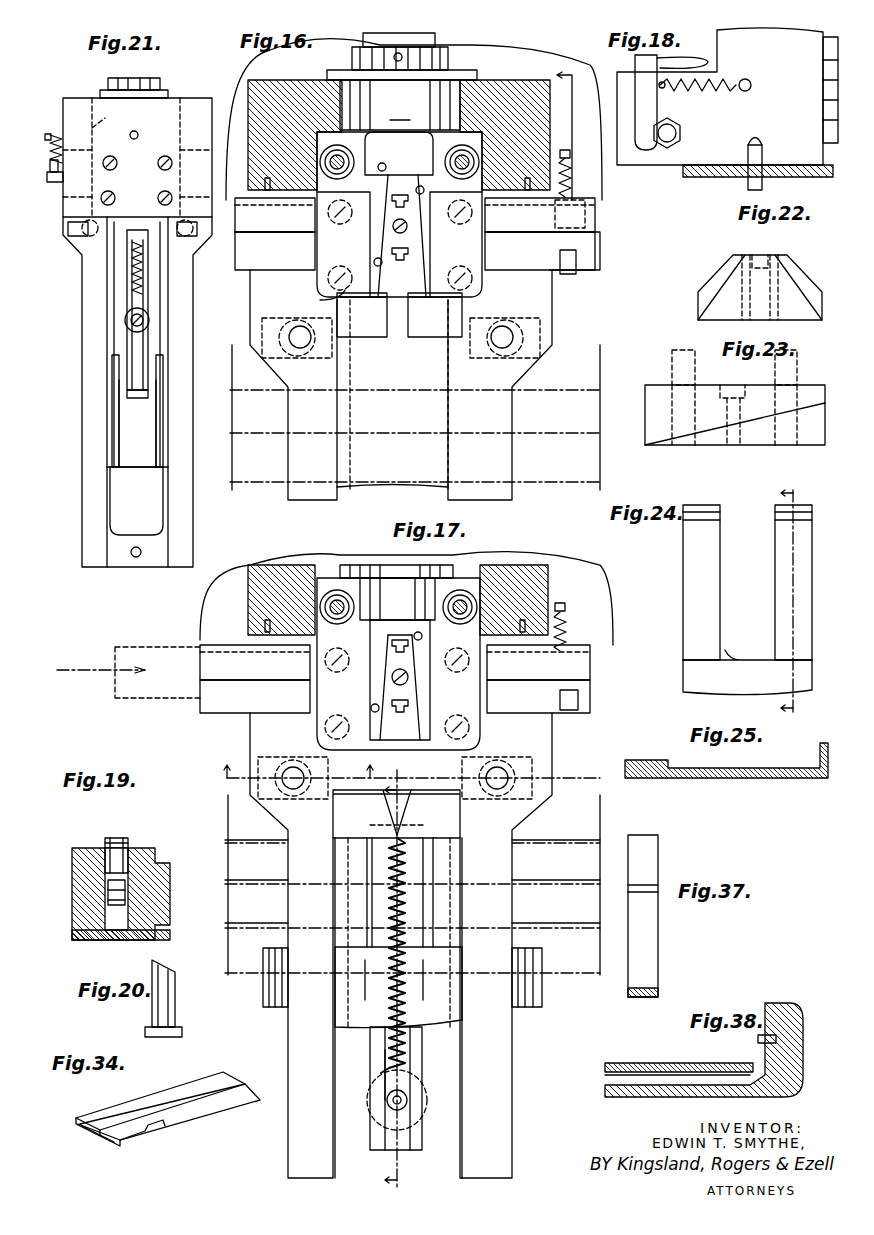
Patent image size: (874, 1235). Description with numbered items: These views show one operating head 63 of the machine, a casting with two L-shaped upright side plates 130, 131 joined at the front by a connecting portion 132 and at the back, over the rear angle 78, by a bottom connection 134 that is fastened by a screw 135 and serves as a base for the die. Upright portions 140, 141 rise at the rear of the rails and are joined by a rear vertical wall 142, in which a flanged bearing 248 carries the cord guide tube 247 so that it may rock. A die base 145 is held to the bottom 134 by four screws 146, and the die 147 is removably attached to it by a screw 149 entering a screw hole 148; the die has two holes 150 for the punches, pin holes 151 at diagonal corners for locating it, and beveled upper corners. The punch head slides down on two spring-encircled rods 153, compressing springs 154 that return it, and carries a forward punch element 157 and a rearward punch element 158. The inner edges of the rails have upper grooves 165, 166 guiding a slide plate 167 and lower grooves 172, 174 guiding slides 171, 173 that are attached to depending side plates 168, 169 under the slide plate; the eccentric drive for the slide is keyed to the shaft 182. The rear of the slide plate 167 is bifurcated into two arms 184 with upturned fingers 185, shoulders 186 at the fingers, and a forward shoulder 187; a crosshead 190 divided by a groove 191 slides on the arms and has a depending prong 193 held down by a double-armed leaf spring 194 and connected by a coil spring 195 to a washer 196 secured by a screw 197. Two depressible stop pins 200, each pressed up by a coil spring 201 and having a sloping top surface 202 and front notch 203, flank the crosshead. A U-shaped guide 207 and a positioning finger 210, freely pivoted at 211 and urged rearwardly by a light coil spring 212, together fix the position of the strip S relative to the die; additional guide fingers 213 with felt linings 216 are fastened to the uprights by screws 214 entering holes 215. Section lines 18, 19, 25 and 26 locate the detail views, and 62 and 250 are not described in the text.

In FIG. 16, the section line 18— 18 is at (562, 283).
In FIG. 17, the section line 19— 19 is at (402, 774).
In FIG. 24, the section line 25— 25 is at (798, 599).
In FIG. 17, the section line 26— 26 is at (403, 980).
In FIG. 17, the direction arrow 62 is at (238, 740).
In FIG. 21, the operating head 63 is at (109, 578).
In FIG. 16, the operating head 63 is at (513, 68).
In FIG. 18, the operating head 63 is at (667, 171).
In FIG. 17, the operating head 63 is at (540, 559).
In FIG. 38, the operating head 63 is at (778, 995).
In FIG. 16, the rear angle 78 is at (236, 110).
In FIG. 18, the rear angle 78 is at (808, 178).
In FIG. 17, the rear angle 78 is at (598, 580).
In FIG. 21, the side plate 130 is at (185, 522).
In FIG. 16, the side plate 130 is at (290, 497).
In FIG. 17, the side plate 130 is at (290, 1160).
In FIG. 19, the side plate 130 is at (72, 870).
In FIG. 38, the side plate 130 is at (605, 1085).
In FIG. 21, the side plate 131 is at (92, 537).
In FIG. 16, the side plate 131 is at (512, 495).
In FIG. 18, the side plate 131 is at (640, 160).
In FIG. 17, the side plate 131 is at (495, 1140).
In FIG. 21, the front connecting portion 132 is at (142, 565).
In FIG. 21, the bottom connection 134 is at (95, 108).
In FIG. 16, the bottom connection 134 is at (530, 80).
In FIG. 17, the bottom connection 134 is at (500, 565).
In FIG. 18, the screw 135 is at (750, 175).
In FIG. 21, the upright portion 140 is at (190, 98).
In FIG. 16, the upright portion 140 is at (290, 80).
In FIG. 17, the upright portion 140 is at (252, 600).
In FIG. 38, the upright portion 140 is at (800, 1025).
In FIG. 21, the upright portion 141 is at (118, 122).
In FIG. 16, the upright portion 141 is at (540, 110).
In FIG. 18, the upright portion 141 is at (745, 35).
In FIG. 17, the upright portion 141 is at (560, 580).
In FIG. 21, the rear vertical wall 142 is at (176, 98).
In FIG. 16, the rear vertical wall 142 is at (340, 80).
In FIG. 17, the rear vertical wall 142 is at (462, 566).
In FIG. 16, the die base 145 is at (330, 176).
In FIG. 17, the die base 145 is at (552, 575).
In FIG. 21, the screws 146 is at (160, 158).
In FIG. 16, the screws 146 is at (328, 280).
In FIG. 17, the screws 146 is at (325, 660).
In FIG. 16, the die 147 is at (330, 300).
In FIG. 22, the die 147 is at (712, 310).
In FIG. 23, the die 147 is at (745, 447).
In FIG. 17, the die 147 is at (372, 685).
In FIG. 22, the screw hole 148 is at (795, 258).
In FIG. 23, the screw hole 148 is at (730, 445).
In FIG. 16, the screw 149 is at (410, 238).
In FIG. 17, the screw 149 is at (410, 684).
In FIG. 16, the holes 150 is at (400, 190).
In FIG. 22, the holes 150 is at (742, 262).
In FIG. 23, the holes 150 is at (672, 440).
In FIG. 17, the holes 150 is at (392, 725).
In FIG. 16, the pin holes 151 is at (380, 250).
In FIG. 22, the pin holes 151 is at (712, 270).
In FIG. 17, the pin holes 151 is at (420, 640).
In FIG. 16, the spring-encircled rods 153 is at (337, 145).
In FIG. 17, the spring-encircled rods 153 is at (335, 590).
In FIG. 16, the springs 154 is at (325, 160).
In FIG. 17, the springs 154 is at (345, 595).
In FIG. 23, the forward punch element 157 is at (672, 365).
In FIG. 23, the rearward punch element 158 is at (797, 365).
In FIG. 16, the upper groove 165 is at (340, 495).
In FIG. 17, the upper groove 165 is at (333, 1122).
In FIG. 19, the upper groove 165 is at (158, 860).
In FIG. 16, the upper groove 166 is at (455, 488).
In FIG. 17, the upper groove 166 is at (455, 1060).
In FIG. 16, the slide plate 167 is at (372, 475).
In FIG. 24, the slide plate 167 is at (695, 680).
In FIG. 25, the slide plate 167 is at (645, 779).
In FIG. 17, the slide plate 167 is at (440, 1012).
In FIG. 21, the depending side plate 168 is at (160, 443).
In FIG. 21, the depending side plate 169 is at (118, 442).
In FIG. 21, the slide 171 is at (166, 402).
In FIG. 21, the lower groove 172 is at (170, 480).
In FIG. 19, the lower groove 172 is at (170, 928).
In FIG. 21, the slide 173 is at (110, 402).
In FIG. 21, the groove 174 is at (110, 488).
In FIG. 17, the shaft 182 is at (533, 990).
In FIG. 16, the arms 184 is at (335, 262).
In FIG. 24, the arms 184 is at (780, 595).
In FIG. 25, the arms 184 is at (745, 779).
In FIG. 17, the arms 184 is at (340, 862).
In FIG. 16, the fingers 185 is at (325, 222).
In FIG. 24, the fingers 185 is at (778, 512).
In FIG. 25, the fingers 185 is at (820, 748).
In FIG. 17, the fingers 185 is at (440, 790).
In FIG. 16, the shoulders 186 is at (330, 235).
In FIG. 24, the shoulders 186 is at (787, 520).
In FIG. 25, the shoulders 186 is at (818, 765).
In FIG. 17, the shoulders 186 is at (465, 800).
In FIG. 24, the shoulder 187 is at (720, 650).
In FIG. 25, the shoulder 187 is at (670, 766).
In FIG. 17, the shoulder 187 is at (440, 945).
In FIG. 16, the crosshead 190 is at (375, 337).
In FIG. 17, the crosshead 190 is at (440, 822).
In FIG. 16, the groove 191 is at (408, 318).
In FIG. 17, the groove 191 is at (385, 805).
In FIG. 21, the depending prong 193 is at (160, 192).
In FIG. 16, the depending prong 193 is at (408, 335).
In FIG. 17, the depending prong 193 is at (430, 790).
In FIG. 21, the double-armed leaf spring 194 is at (128, 290).
In FIG. 17, the double-armed leaf spring 194 is at (390, 1082).
In FIG. 21, the coil spring 195 is at (132, 272).
In FIG. 17, the coil spring 195 is at (388, 905).
In FIG. 21, the washer 196 is at (126, 317).
In FIG. 17, the washer 196 is at (430, 1100).
In FIG. 21, the screw 197 is at (130, 323).
In FIG. 17, the screw 197 is at (408, 1107).
In FIG. 21, the stop pins 200 is at (82, 245).
In FIG. 16, the stop pins 200 is at (515, 330).
In FIG. 17, the stop pins 200 is at (290, 766).
In FIG. 19, the stop pins 200 is at (128, 848).
In FIG. 20, the stop pins 200 is at (176, 990).
In FIG. 19, the coil spring 201 is at (125, 915).
In FIG. 16, the top surface 202 is at (275, 330).
In FIG. 17, the top surface 202 is at (515, 766).
In FIG. 19, the top surface 202 is at (125, 838).
In FIG. 20, the top surface 202 is at (170, 975).
In FIG. 16, the front notch 203 is at (292, 350).
In FIG. 17, the front notch 203 is at (505, 762).
In FIG. 19, the front notch 203 is at (108, 838).
In FIG. 20, the front notch 203 is at (152, 965).
In FIG. 16, the U-shaped guide 207 is at (600, 262).
In FIG. 18, the U-shaped guide 207 is at (710, 62).
In FIG. 17, the U-shaped guide 207 is at (212, 705).
In FIG. 34, the U-shaped guide 207 is at (126, 1146).
In FIG. 21, the positioning finger 210 is at (58, 182).
In FIG. 16, the positioning finger 210 is at (578, 274).
In FIG. 18, the positioning finger 210 is at (668, 96).
In FIG. 17, the positioning finger 210 is at (578, 712).
In FIG. 21, the pivot 211 is at (62, 175).
In FIG. 16, the pivot 211 is at (585, 216).
In FIG. 18, the pivot 211 is at (678, 130).
In FIG. 21, the coil spring 212 is at (60, 140).
In FIG. 16, the coil spring 212 is at (578, 175).
In FIG. 18, the coil spring 212 is at (745, 82).
In FIG. 17, the coil spring 212 is at (578, 630).
In FIG. 37, the guide fingers 213 is at (660, 948).
In FIG. 38, the guide fingers 213 is at (680, 1064).
In FIG. 38, the screws 214 is at (768, 1035).
In FIG. 16, the holes 215 is at (268, 192).
In FIG. 17, the holes 215 is at (265, 626).
In FIG. 38, the holes 215 is at (785, 1060).
In FIG. 37, the felt linings 216 is at (645, 1000).
In FIG. 38, the felt linings 216 is at (650, 1078).
In FIG. 21, the guide tube 247 is at (125, 80).
In FIG. 16, the guide tube 247 is at (436, 40).
In FIG. 17, the guide tube 247 is at (395, 566).
In FIG. 21, the flanged bearing 248 is at (105, 92).
In FIG. 16, the flanged bearing 248 is at (450, 58).
In FIG. 18, the flanged bearing 248 is at (823, 90).
In FIG. 16, the bore 250 is at (420, 190).
In FIG. 16, the strip S is at (600, 240).
In FIG. 18, the strip S is at (665, 62).
In FIG. 17, the strip S is at (115, 685).